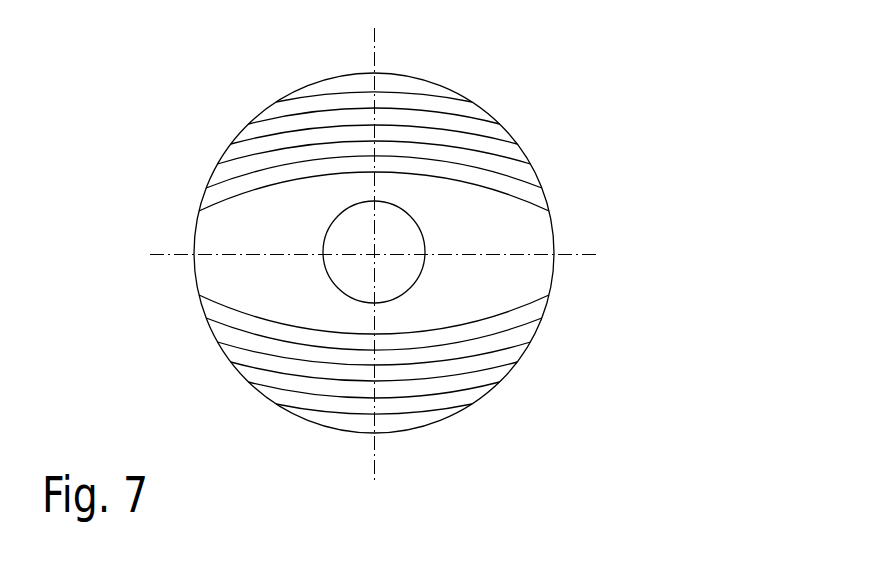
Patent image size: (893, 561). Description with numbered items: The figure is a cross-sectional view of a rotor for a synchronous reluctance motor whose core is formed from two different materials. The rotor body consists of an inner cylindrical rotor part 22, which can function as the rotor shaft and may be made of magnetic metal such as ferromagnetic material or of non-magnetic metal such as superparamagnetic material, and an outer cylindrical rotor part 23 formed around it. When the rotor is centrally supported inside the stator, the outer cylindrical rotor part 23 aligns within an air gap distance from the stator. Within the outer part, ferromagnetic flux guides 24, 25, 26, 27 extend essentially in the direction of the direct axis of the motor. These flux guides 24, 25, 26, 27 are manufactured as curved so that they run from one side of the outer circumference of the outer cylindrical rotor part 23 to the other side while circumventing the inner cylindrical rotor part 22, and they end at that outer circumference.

The inner cylindrical rotor part 22 is at (423, 280).
The outer cylindrical rotor part 23 is at (413, 81).
The ferromagnetic flux guide 24 is at (487, 113).
The ferromagnetic flux guide 25 is at (510, 155).
The ferromagnetic flux guide 26 is at (538, 202).
The ferromagnetic flux guide 27 is at (517, 357).